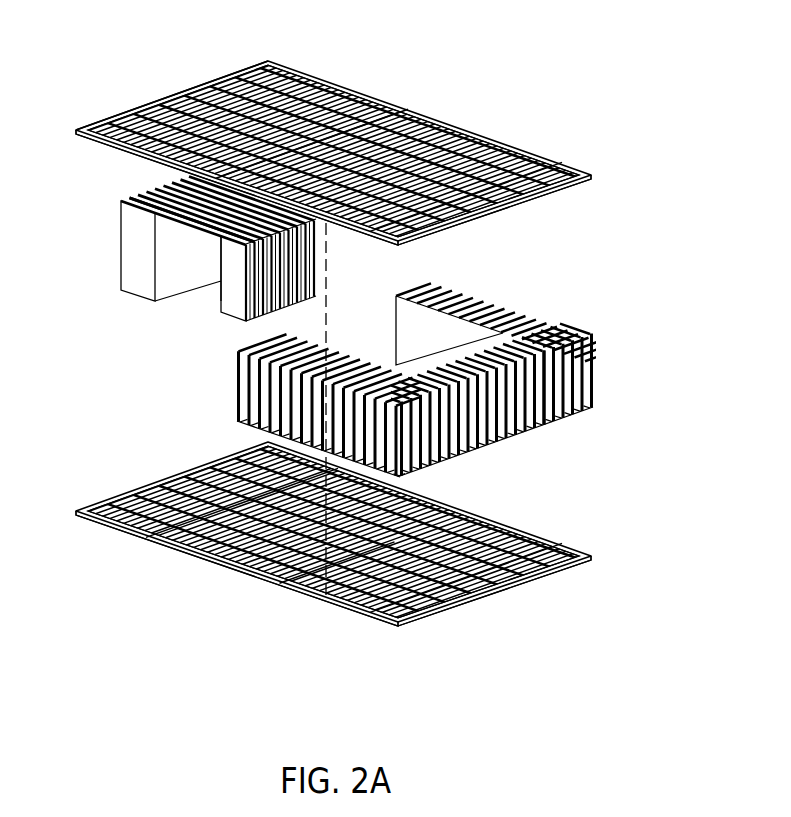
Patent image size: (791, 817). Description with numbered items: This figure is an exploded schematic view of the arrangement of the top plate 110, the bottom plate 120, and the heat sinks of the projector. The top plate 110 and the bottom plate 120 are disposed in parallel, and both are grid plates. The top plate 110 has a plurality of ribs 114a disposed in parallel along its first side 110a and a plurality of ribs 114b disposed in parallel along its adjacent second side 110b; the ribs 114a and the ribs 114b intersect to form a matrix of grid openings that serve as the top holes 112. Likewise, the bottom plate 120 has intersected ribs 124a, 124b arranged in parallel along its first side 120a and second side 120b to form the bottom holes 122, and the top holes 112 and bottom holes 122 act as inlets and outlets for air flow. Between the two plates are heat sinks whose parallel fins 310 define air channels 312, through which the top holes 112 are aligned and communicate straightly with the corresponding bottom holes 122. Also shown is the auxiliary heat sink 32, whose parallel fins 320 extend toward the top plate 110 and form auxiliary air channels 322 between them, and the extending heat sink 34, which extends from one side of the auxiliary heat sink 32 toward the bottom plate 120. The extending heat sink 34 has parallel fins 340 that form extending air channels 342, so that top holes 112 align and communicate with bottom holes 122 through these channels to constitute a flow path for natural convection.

The top plate 110 is at (505, 135).
The first side of the top plate 110a is at (343, 82).
The second side of the top plate 110b is at (565, 177).
The top holes 112 is at (398, 100).
The ribs 114a is at (272, 58).
The ribs 114b is at (508, 180).
The bottom plate 120 is at (137, 532).
The first side of the bottom plate 120a is at (330, 603).
The second side of the bottom plate 120b is at (563, 557).
The bottom holes 122 is at (197, 550).
The ribs 124a is at (297, 583).
The ribs 124b is at (498, 567).
The fins 310 is at (227, 367).
The air channels 312 is at (233, 397).
The extending heat sink 34 is at (181, 251).
The auxiliary heat sink 32 is at (165, 215).
The fins 320 is at (200, 212).
The auxiliary air channels 322 is at (180, 213).
The fins 340 is at (172, 177).
The extending air channels 342 is at (134, 193).